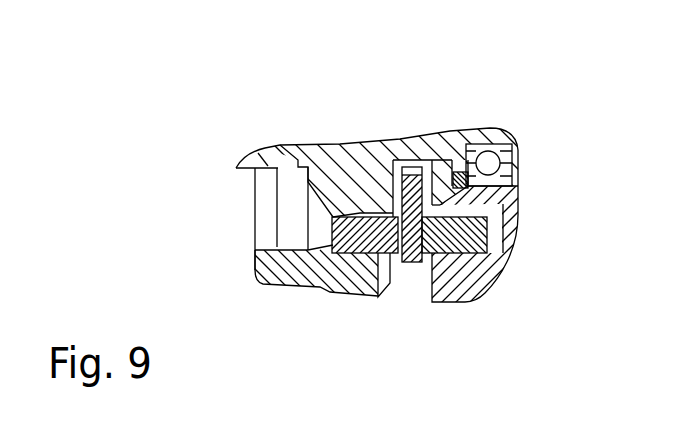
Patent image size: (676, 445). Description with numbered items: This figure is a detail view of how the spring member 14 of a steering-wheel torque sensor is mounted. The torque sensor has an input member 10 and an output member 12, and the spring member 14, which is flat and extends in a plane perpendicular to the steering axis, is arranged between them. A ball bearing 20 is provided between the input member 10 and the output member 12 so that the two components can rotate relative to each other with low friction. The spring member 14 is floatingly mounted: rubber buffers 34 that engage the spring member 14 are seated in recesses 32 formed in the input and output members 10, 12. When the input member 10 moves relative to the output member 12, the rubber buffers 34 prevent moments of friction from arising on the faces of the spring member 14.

The input member 10 is at (474, 288).
The output member 12 is at (277, 274).
The spring member 14 is at (395, 150).
The ball bearing 20 is at (480, 152).
The recess 32 is at (320, 202).
The rubber buffer 34 is at (432, 252).